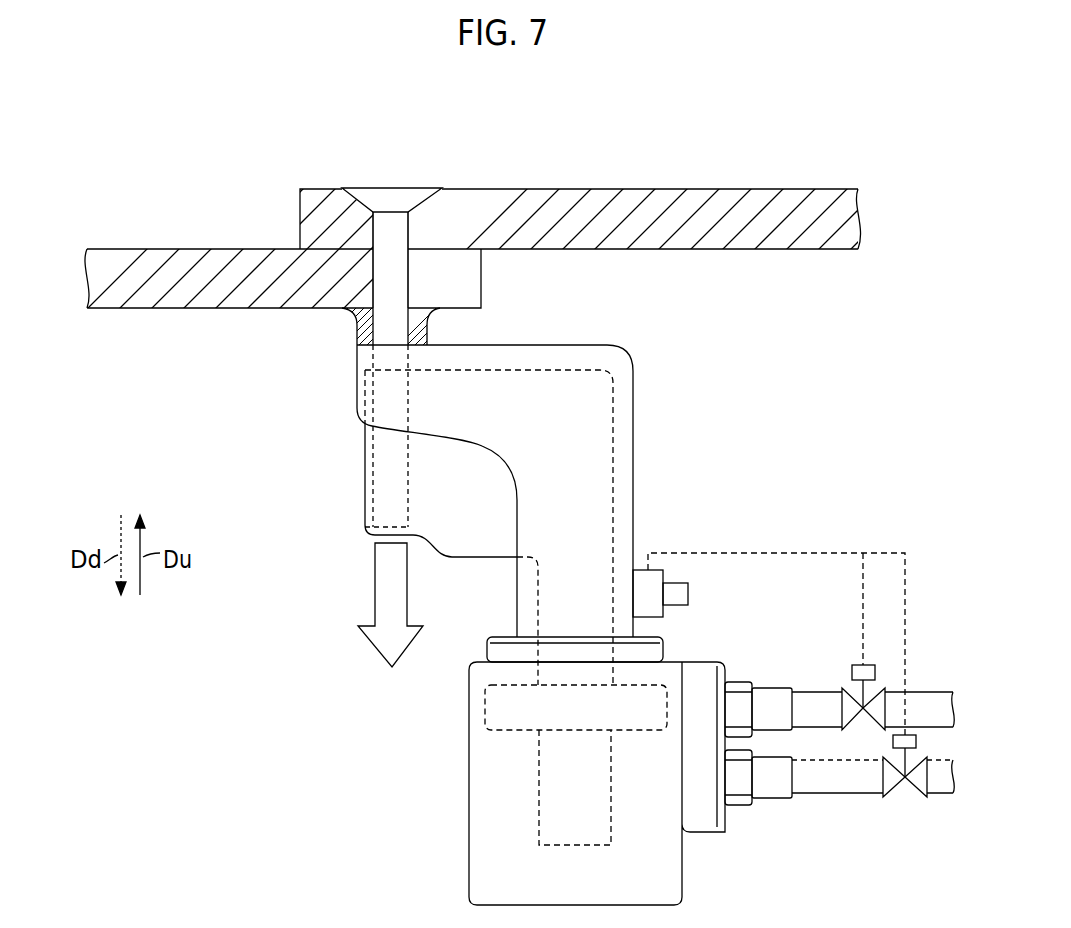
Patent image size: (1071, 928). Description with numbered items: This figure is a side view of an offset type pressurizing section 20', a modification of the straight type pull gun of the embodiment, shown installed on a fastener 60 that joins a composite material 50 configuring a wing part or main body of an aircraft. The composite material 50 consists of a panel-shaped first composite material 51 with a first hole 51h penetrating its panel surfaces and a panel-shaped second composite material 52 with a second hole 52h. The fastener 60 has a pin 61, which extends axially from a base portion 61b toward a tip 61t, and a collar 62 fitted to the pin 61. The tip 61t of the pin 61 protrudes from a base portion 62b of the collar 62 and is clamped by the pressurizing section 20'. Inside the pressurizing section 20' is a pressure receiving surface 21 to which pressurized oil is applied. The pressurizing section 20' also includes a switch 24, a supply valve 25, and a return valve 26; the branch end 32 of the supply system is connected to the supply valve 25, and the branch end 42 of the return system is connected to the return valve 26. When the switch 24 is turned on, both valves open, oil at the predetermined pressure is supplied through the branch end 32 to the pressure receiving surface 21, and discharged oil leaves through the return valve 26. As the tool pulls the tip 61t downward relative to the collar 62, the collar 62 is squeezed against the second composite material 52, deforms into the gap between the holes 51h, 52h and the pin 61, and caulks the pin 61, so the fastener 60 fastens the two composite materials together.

The pressurizing section 20' is at (625, 700).
The pressure receiving surface 21 is at (507, 688).
The switch 24 is at (656, 570).
The supply valve 25 is at (853, 668).
The return valve 26 is at (890, 742).
The branch end 32 is at (839, 681).
The branch end 42 is at (840, 795).
The composite material 50 is at (546, 217).
The first composite material 51 is at (722, 195).
The first hole 51h is at (381, 234).
The second composite material 52 is at (185, 262).
The second hole 52h is at (377, 274).
The fastener 60 is at (408, 304).
The pin 61 is at (367, 319).
The base portion 61b is at (402, 187).
The tip 61t is at (368, 511).
The collar 62 is at (443, 495).
The base portion 62b is at (418, 347).